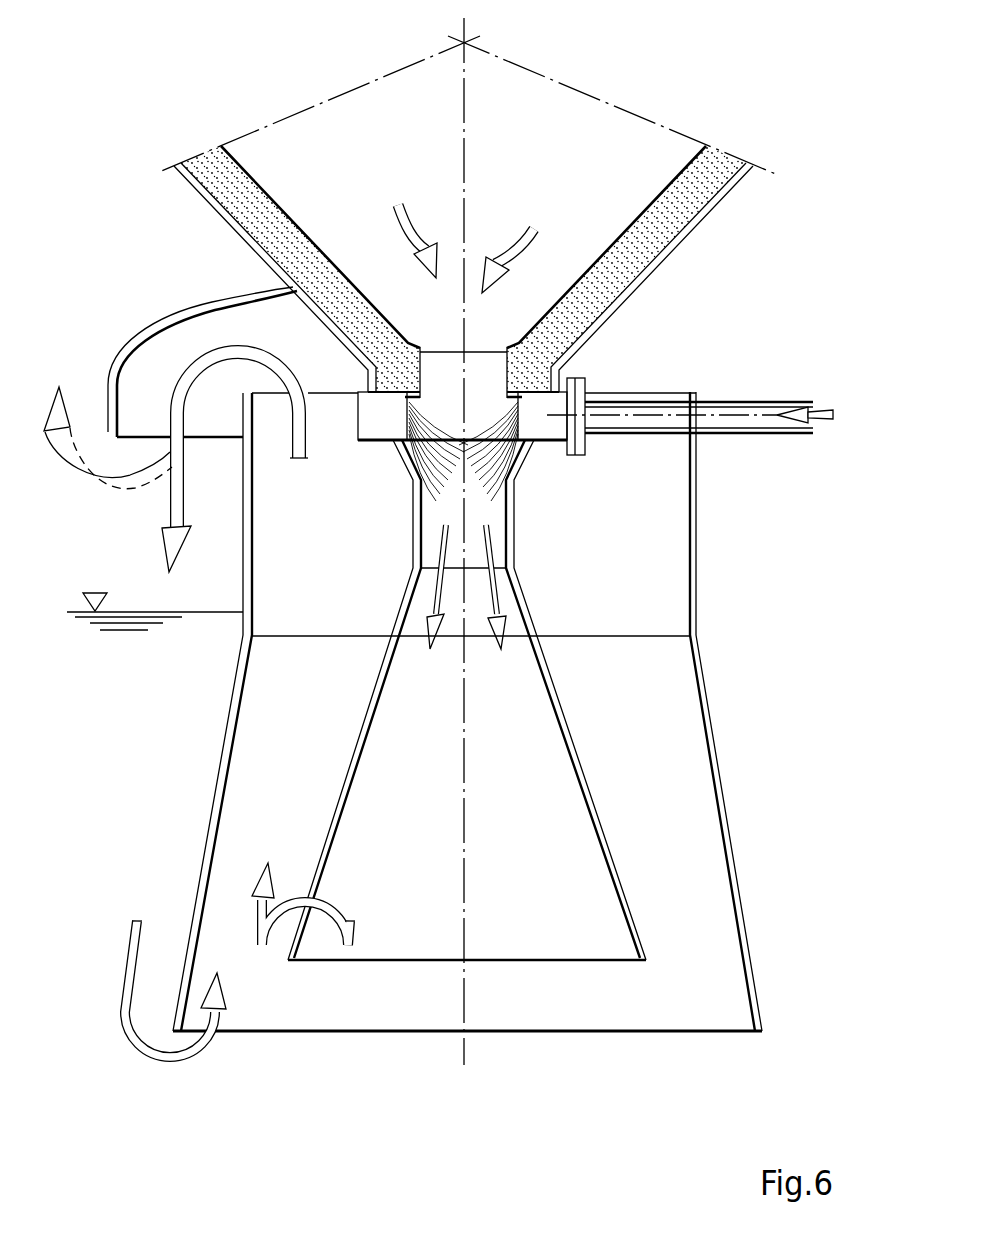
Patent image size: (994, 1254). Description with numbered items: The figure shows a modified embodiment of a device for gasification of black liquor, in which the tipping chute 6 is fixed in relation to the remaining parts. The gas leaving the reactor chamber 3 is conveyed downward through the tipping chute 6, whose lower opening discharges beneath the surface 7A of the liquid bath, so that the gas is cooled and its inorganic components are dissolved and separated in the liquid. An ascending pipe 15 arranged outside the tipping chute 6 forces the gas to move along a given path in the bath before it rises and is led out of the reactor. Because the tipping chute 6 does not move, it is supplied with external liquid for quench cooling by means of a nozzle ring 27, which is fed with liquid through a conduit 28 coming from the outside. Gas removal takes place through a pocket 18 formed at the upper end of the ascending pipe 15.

The reactor chamber 3 is at (358, 135).
The pocket 18 is at (173, 318).
The nozzle ring 27 is at (537, 407).
The conduit 28 is at (670, 414).
The surface of the liquid bath 7A is at (93, 592).
The tipping chute 6 is at (574, 736).
The ascending pipe 15 is at (214, 797).